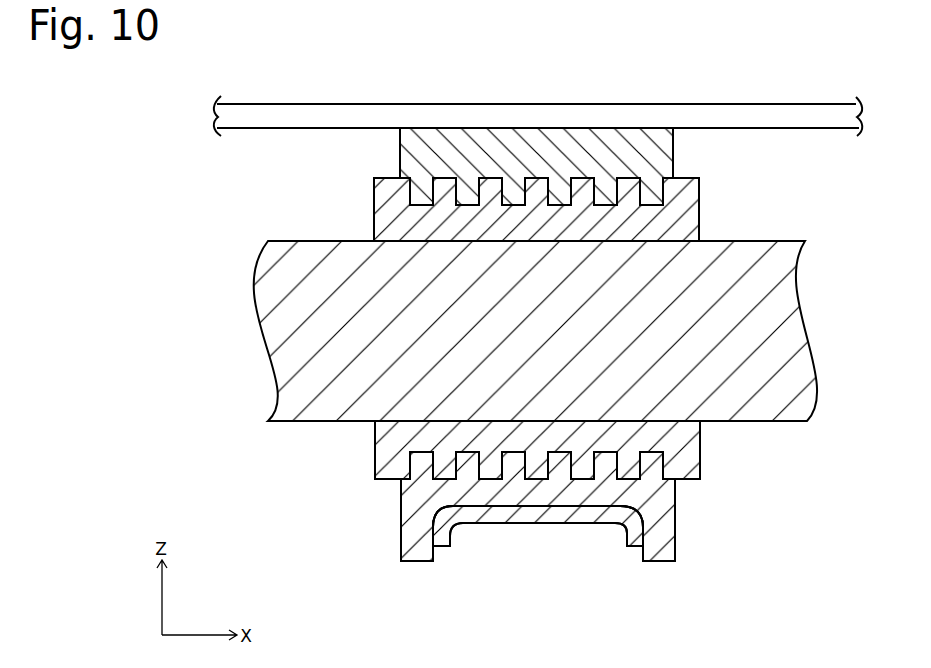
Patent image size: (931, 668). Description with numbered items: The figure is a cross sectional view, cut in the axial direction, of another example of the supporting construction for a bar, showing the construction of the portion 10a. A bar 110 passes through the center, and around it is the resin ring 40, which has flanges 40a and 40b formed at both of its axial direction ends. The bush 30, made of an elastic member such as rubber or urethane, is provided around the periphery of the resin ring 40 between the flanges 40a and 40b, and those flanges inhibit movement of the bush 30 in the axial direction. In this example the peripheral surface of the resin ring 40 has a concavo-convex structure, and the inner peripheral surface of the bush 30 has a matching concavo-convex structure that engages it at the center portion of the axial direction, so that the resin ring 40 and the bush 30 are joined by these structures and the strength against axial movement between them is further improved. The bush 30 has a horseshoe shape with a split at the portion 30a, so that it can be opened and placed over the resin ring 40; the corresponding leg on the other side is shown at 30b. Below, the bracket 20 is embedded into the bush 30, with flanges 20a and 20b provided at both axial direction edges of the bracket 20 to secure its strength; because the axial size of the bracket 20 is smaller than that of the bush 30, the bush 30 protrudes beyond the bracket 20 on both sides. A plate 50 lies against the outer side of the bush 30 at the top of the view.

The plate / substrate 50 is at (763, 113).
The shaft 110 is at (793, 337).
The resin ring 40 is at (688, 217).
The flange 40a is at (385, 460).
The flange 40b is at (692, 458).
The bush 30 is at (665, 143).
The split portion of the bush 30a is at (408, 540).
The right leg of holding member 30b is at (662, 530).
The bracket 20 is at (523, 515).
The flange 20a is at (445, 542).
The flange 20b is at (637, 542).
The portion 10a is at (509, 574).